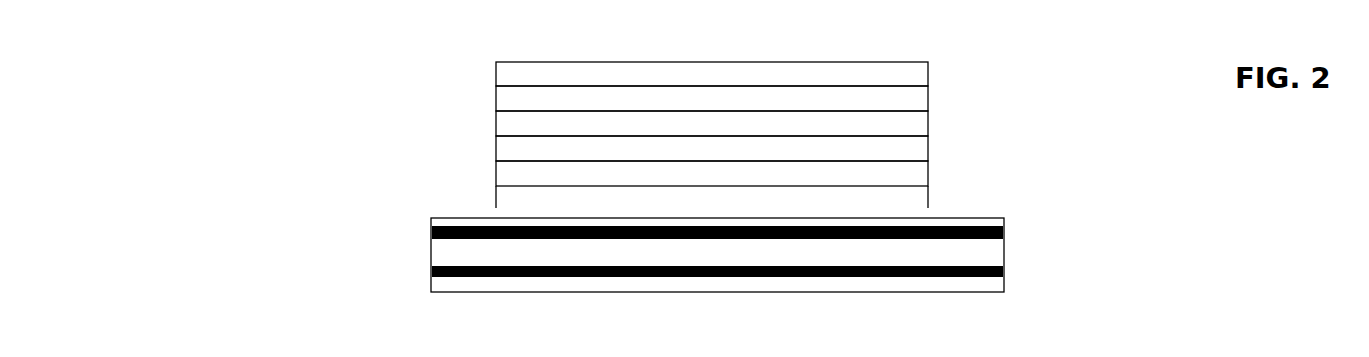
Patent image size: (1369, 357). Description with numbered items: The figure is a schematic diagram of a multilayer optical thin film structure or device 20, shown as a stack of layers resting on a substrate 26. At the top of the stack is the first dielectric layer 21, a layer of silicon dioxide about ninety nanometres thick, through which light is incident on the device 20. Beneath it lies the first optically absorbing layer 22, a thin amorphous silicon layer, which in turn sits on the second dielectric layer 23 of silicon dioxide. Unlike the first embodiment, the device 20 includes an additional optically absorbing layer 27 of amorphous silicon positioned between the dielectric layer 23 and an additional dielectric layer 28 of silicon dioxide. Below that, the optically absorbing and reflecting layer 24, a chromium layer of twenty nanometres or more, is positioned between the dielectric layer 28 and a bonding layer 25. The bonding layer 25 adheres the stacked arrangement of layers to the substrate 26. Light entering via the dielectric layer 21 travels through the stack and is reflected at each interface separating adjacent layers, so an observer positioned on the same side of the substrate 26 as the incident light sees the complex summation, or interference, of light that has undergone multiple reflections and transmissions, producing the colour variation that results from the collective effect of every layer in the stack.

The multilayer optical thin film structure 20 is at (305, 143).
The first dielectric layer 21 is at (928, 77).
The first optically absorbing layer 22 is at (928, 101).
The second dielectric layer 23 is at (928, 127).
The optically absorbing and reflecting layer 24 is at (928, 202).
The bonding layer 25 is at (496, 213).
The substrate 26 is at (1004, 263).
The additional optically absorbing layer 27 is at (928, 152).
The additional dielectric layer 28 is at (928, 174).